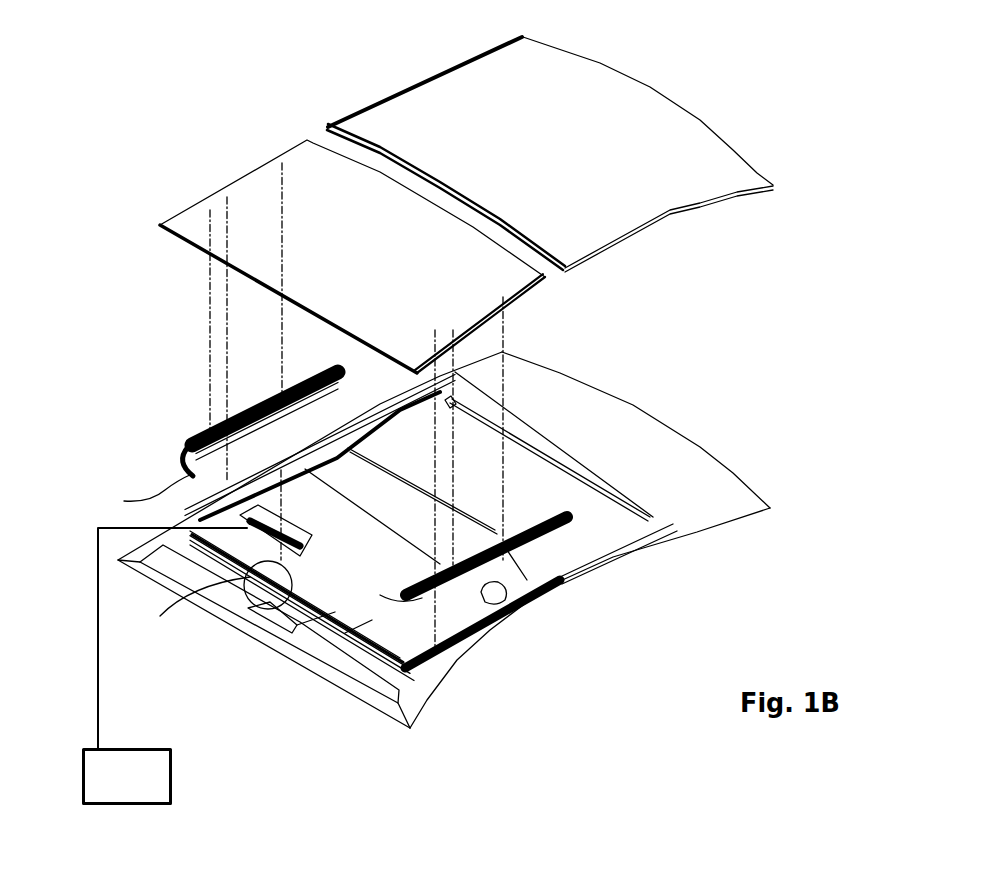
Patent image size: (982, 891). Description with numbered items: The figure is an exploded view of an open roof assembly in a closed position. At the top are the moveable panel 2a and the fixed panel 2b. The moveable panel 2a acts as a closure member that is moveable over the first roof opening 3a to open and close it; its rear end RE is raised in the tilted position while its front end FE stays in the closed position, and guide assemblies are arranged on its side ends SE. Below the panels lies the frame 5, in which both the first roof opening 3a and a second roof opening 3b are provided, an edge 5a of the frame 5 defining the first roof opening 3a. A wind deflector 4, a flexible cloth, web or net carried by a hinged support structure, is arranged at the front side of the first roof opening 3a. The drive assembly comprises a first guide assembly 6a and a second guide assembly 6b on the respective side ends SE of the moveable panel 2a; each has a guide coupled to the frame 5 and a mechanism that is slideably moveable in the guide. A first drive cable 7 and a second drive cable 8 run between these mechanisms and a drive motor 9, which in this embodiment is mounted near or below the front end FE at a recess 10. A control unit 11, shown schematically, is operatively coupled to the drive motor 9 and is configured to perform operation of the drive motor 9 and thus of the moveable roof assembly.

The moveable panel 2a is at (352, 256).
The fixed panel 2b is at (550, 154).
The first roof opening 3a is at (320, 528).
The second roof opening 3b is at (500, 488).
The wind deflector 4 is at (248, 521).
The frame 5 is at (494, 660).
The edge 5a is at (487, 578).
The first guide assembly 6a is at (510, 558).
The second guide assembly 6b is at (190, 420).
The first drive cable 7 is at (345, 633).
The second drive cable 8 is at (147, 499).
The drive motor 9 is at (216, 603).
The recess 10 is at (270, 626).
The control unit 11 is at (166, 666).
The rear end RE is at (366, 170).
The side end SE is at (241, 177).
The front end FE is at (257, 298).